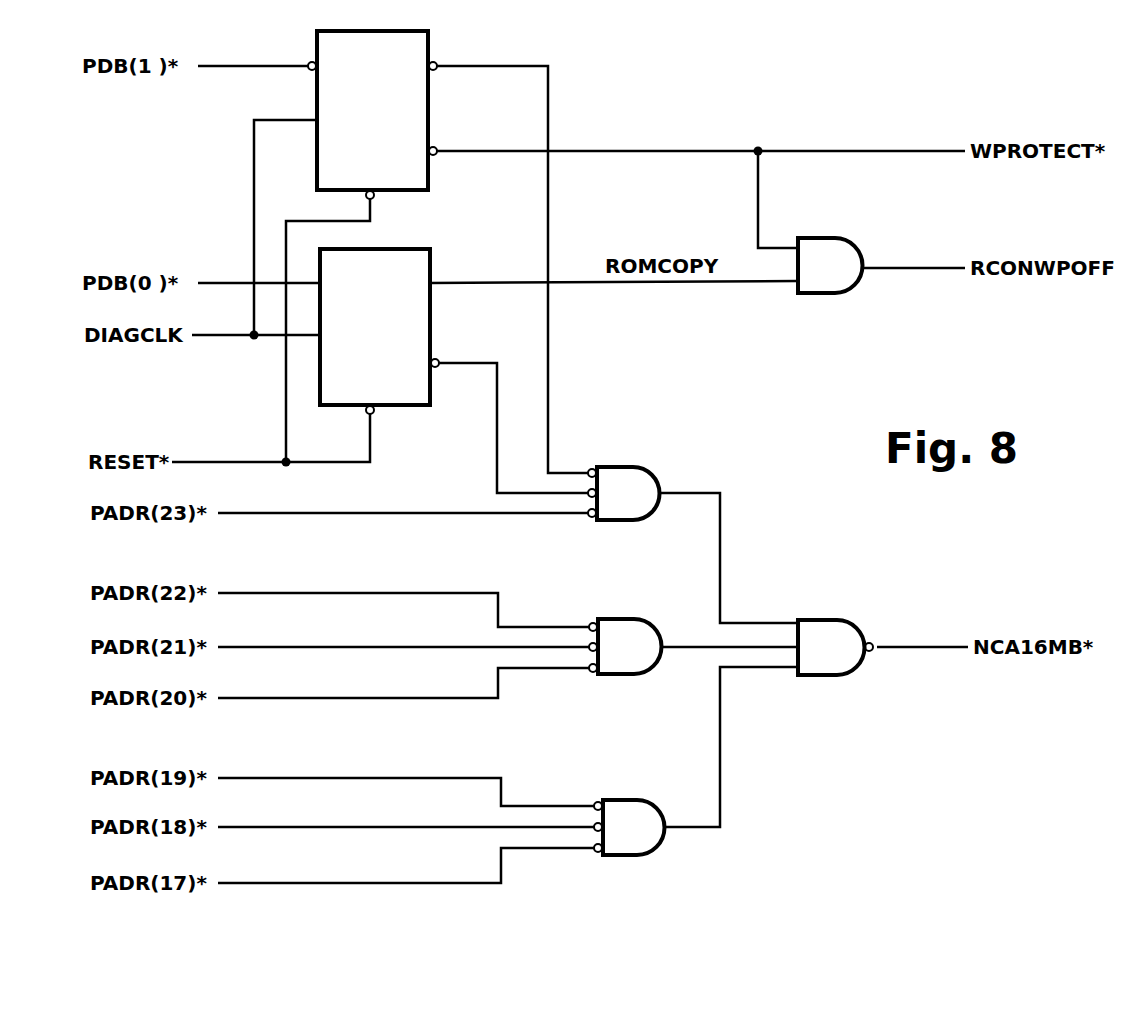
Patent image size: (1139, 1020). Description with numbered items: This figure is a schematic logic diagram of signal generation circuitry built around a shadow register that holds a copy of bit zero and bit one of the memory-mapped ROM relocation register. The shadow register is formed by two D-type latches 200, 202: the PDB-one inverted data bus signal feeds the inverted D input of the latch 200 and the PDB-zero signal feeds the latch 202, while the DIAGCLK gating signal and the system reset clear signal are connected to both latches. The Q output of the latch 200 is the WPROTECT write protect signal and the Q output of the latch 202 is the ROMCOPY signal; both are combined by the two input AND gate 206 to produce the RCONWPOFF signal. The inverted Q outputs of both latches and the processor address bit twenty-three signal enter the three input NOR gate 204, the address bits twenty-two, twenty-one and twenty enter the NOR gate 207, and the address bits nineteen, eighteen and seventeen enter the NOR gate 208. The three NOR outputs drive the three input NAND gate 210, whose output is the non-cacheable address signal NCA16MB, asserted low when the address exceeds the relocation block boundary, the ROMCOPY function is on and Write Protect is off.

The D-type latch 200 is at (430, 50).
The D-type latch 202 is at (432, 260).
The three input NOR gate 204 is at (632, 467).
The two input AND gate 206 is at (824, 293).
The three input NOR gate 207 is at (640, 619).
The three input NOR gate 208 is at (643, 800).
The three input NAND gate 210 is at (845, 675).